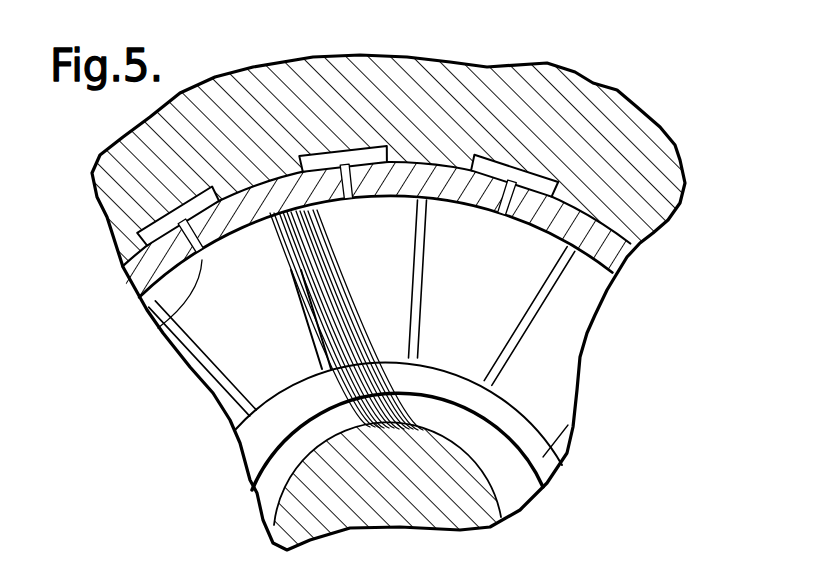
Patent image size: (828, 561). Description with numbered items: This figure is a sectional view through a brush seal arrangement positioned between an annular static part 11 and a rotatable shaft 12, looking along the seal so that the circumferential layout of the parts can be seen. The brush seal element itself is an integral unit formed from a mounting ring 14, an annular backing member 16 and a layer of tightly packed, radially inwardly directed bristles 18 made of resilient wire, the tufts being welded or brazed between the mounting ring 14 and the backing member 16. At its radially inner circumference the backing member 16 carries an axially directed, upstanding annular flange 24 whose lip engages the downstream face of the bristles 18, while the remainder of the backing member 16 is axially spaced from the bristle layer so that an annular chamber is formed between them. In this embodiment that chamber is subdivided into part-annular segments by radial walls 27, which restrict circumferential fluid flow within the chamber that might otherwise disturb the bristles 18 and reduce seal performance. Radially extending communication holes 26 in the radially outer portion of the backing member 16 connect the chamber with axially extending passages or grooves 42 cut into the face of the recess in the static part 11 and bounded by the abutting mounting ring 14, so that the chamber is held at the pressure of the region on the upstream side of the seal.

The annular static part 11 is at (648, 147).
The rotatable shaft 12 is at (490, 509).
The mounting ring 14 is at (145, 282).
The annular backing member 16 is at (563, 406).
The bristles 18 is at (363, 340).
The annular flange 24 is at (543, 460).
The communication holes 26 is at (167, 317).
The radial walls 27 is at (197, 373).
The axially extending passages 42 is at (357, 153).